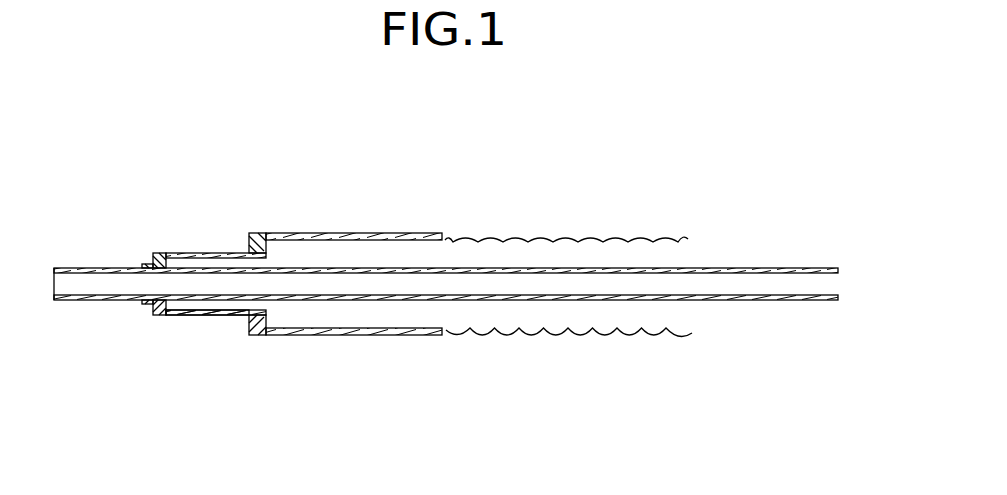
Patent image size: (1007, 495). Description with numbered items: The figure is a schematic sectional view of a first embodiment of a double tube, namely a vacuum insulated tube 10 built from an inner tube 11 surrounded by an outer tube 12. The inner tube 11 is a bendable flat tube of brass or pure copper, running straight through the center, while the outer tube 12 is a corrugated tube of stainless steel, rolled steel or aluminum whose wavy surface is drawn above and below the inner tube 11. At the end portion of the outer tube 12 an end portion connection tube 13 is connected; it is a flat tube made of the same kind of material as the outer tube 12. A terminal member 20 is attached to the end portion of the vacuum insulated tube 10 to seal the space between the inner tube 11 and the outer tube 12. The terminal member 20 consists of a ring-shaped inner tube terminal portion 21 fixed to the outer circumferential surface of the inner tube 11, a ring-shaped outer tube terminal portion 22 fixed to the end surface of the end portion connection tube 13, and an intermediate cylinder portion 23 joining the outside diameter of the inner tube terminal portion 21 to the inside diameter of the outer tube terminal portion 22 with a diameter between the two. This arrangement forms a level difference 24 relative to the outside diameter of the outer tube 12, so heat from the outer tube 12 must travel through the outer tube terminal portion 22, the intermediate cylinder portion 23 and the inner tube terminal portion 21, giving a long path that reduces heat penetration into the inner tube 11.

The vacuum insulated tube 10 is at (460, 225).
The inner tube 11 is at (548, 272).
The outer tube 12 is at (463, 238).
The end portion connection tube 13 is at (395, 233).
The terminal member 20 is at (159, 241).
The inner tube terminal portion 21 is at (153, 262).
The outer tube terminal portion 22 is at (250, 233).
The intermediate cylinder portion 23 is at (178, 257).
The level difference 24 is at (240, 315).